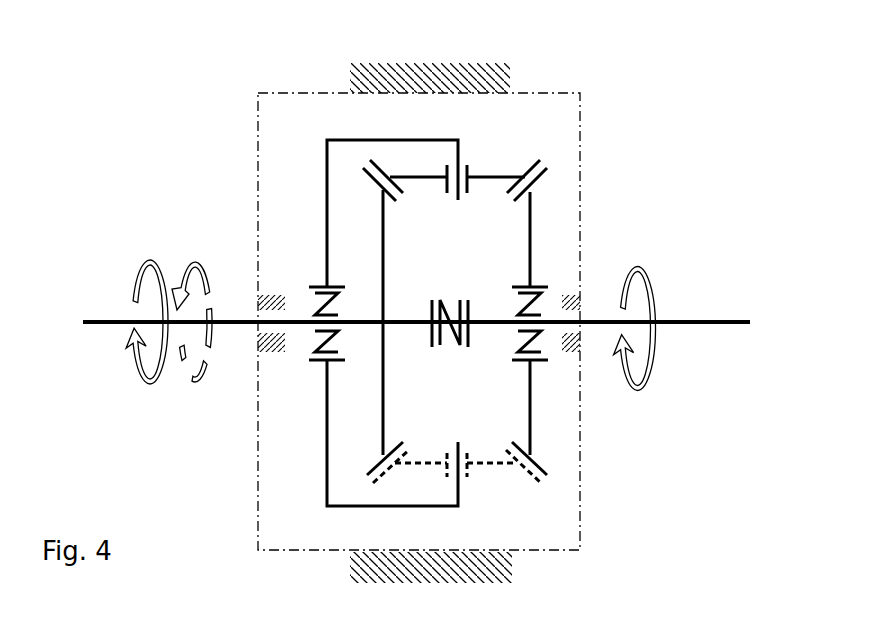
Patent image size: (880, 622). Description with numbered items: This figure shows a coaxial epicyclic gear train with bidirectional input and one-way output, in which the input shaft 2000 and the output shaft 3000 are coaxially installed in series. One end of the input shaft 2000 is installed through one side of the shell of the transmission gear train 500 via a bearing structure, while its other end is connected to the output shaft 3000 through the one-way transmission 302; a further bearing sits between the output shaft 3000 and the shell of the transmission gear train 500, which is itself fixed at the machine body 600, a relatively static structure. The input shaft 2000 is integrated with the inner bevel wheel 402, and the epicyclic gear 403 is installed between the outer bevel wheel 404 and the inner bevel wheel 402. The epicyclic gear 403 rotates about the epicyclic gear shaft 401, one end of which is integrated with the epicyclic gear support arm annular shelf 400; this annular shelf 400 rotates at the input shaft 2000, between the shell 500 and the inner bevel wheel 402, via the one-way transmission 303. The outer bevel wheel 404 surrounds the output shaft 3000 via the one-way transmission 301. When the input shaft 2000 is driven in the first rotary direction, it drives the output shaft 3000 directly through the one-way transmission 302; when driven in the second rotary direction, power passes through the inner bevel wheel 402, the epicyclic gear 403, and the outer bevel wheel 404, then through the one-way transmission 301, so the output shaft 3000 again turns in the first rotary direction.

The machine body 600 is at (428, 86).
The shell of the transmission gear train 500 is at (258, 185).
The epicyclic gear support arm annular shelf 400 is at (327, 228).
The epicyclic gear shaft 401 is at (458, 165).
The inner bevel wheel 402 is at (400, 441).
The epicyclic gear 403 is at (531, 174).
The outer bevel wheel 404 is at (540, 183).
The one-way transmission 301 is at (520, 350).
The one-way transmission 302 is at (445, 300).
The one-way transmission 303 is at (318, 308).
The input shaft 2000 is at (110, 322).
The output shaft 3000 is at (710, 322).